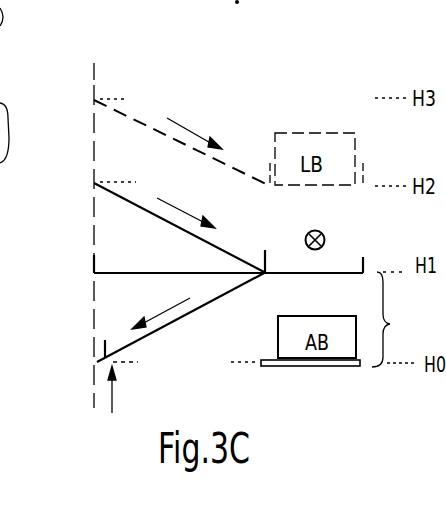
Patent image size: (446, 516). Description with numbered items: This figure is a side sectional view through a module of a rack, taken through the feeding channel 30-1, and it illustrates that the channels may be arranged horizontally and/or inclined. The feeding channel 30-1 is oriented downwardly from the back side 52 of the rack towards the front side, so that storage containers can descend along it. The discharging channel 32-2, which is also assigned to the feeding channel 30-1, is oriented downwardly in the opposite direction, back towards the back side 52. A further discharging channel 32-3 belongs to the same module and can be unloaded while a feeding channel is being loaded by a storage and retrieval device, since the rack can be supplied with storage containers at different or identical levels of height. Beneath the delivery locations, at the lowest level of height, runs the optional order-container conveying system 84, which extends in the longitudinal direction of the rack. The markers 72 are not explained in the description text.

The back side 52 is at (81, 82).
The stop / end marker 72 is at (93, 269).
The feeding channel 30-1 is at (118, 198).
The discharging channel 32-3 is at (110, 274).
The discharging channel 32-2 is at (158, 333).
The order-container conveying system 84 is at (268, 368).